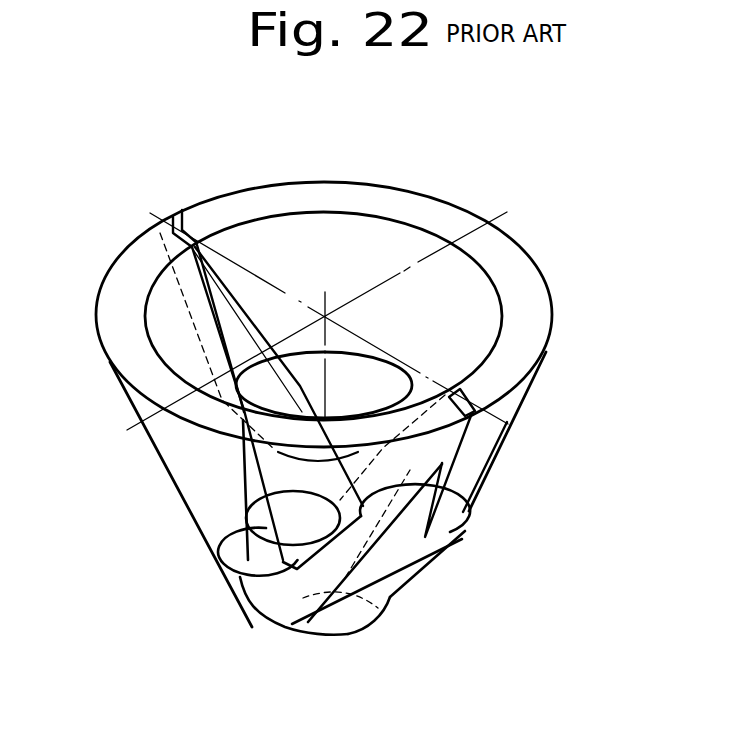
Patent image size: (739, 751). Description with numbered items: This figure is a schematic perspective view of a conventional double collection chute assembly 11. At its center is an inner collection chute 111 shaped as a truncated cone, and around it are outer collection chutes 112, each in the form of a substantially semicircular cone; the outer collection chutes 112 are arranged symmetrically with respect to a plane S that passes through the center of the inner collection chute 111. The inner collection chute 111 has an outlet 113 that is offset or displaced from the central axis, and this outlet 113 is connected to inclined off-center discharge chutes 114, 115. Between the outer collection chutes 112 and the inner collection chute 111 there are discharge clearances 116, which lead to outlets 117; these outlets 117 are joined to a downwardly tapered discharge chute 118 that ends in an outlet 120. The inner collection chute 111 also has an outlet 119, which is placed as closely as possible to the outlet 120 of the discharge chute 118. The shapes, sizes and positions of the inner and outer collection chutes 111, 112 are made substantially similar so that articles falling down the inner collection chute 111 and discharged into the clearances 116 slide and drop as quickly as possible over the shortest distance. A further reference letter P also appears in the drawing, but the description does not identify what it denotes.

The double collection chute assembly 11 is at (109, 433).
The inner collection chute 111 is at (254, 244).
The outer collection chutes 112 is at (546, 350).
The outlet 113 is at (386, 355).
The inclined off-center discharge chute 114 is at (240, 490).
The inclined off-center discharge chute 115 is at (247, 553).
The discharge clearances 116 is at (124, 332).
The outlets 117 is at (402, 527).
The discharge chute 118 is at (400, 593).
The outlet 119 is at (250, 567).
The outlet 120 is at (357, 617).
The plane S is at (286, 292).
The center line P is at (420, 264).